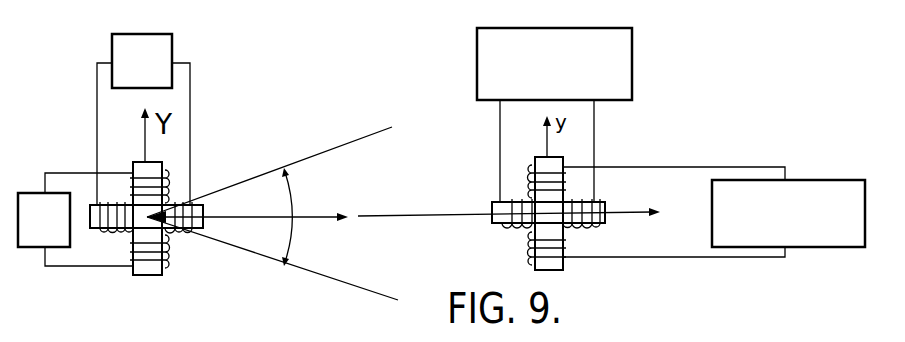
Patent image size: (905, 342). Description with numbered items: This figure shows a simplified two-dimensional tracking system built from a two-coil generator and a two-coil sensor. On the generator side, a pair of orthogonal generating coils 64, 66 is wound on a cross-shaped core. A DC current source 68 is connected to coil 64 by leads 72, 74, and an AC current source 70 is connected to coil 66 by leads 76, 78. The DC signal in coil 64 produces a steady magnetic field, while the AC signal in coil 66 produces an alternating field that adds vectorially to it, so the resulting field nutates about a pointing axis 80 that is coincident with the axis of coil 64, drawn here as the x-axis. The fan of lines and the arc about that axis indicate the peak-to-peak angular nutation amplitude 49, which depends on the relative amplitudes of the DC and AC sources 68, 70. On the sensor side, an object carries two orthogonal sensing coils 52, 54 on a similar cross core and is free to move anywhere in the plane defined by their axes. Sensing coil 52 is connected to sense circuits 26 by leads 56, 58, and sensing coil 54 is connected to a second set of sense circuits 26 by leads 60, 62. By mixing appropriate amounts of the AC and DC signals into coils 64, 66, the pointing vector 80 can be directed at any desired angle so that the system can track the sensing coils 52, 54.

The sense circuits 26 is at (632, 66).
The peak-to-peak angular nutation amplitude 49 is at (280, 203).
The sensing coil 52 is at (508, 234).
The sensing coil 54 is at (533, 252).
The lead 56 is at (500, 146).
The lead 58 is at (595, 119).
The lead 60 is at (758, 166).
The lead 62 is at (757, 262).
The generating coil 64 is at (117, 241).
The generating coil 66 is at (168, 251).
The current source 68 is at (116, 35).
The current source 70 is at (28, 193).
The lead 72 is at (97, 83).
The lead 74 is at (191, 88).
The lead 76 is at (76, 172).
The lead 78 is at (97, 268).
The pointing axis 80 is at (318, 219).